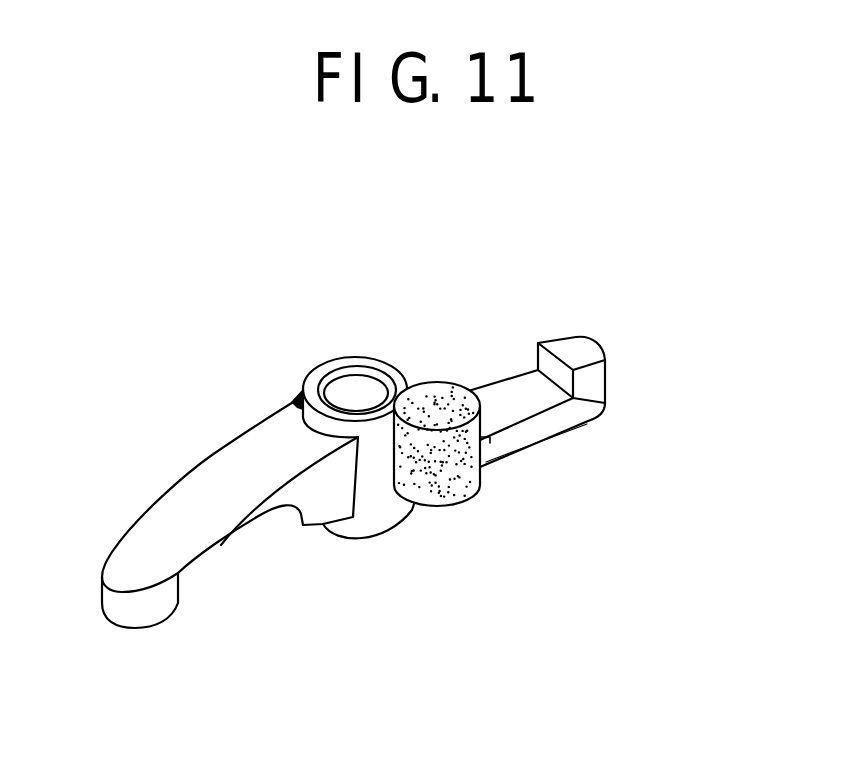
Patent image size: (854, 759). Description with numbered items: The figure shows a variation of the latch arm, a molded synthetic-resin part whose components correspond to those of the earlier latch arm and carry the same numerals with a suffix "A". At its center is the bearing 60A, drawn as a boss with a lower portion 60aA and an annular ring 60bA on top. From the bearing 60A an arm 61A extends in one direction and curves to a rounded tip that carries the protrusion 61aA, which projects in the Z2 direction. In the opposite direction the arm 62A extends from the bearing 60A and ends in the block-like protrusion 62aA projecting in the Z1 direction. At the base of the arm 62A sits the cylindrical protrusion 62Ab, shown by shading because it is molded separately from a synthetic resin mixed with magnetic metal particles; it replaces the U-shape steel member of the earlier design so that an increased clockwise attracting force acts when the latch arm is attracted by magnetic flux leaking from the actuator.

The bearing 60A is at (374, 502).
The lower portion of boss 60aA is at (390, 538).
The annular ring / bearing hole portion 60bA is at (378, 360).
The arm 61A is at (192, 468).
The protrusion 61aA is at (142, 615).
The arm 62A is at (577, 428).
The protrusion 62aA is at (588, 335).
The protrusion 62Ab is at (443, 473).